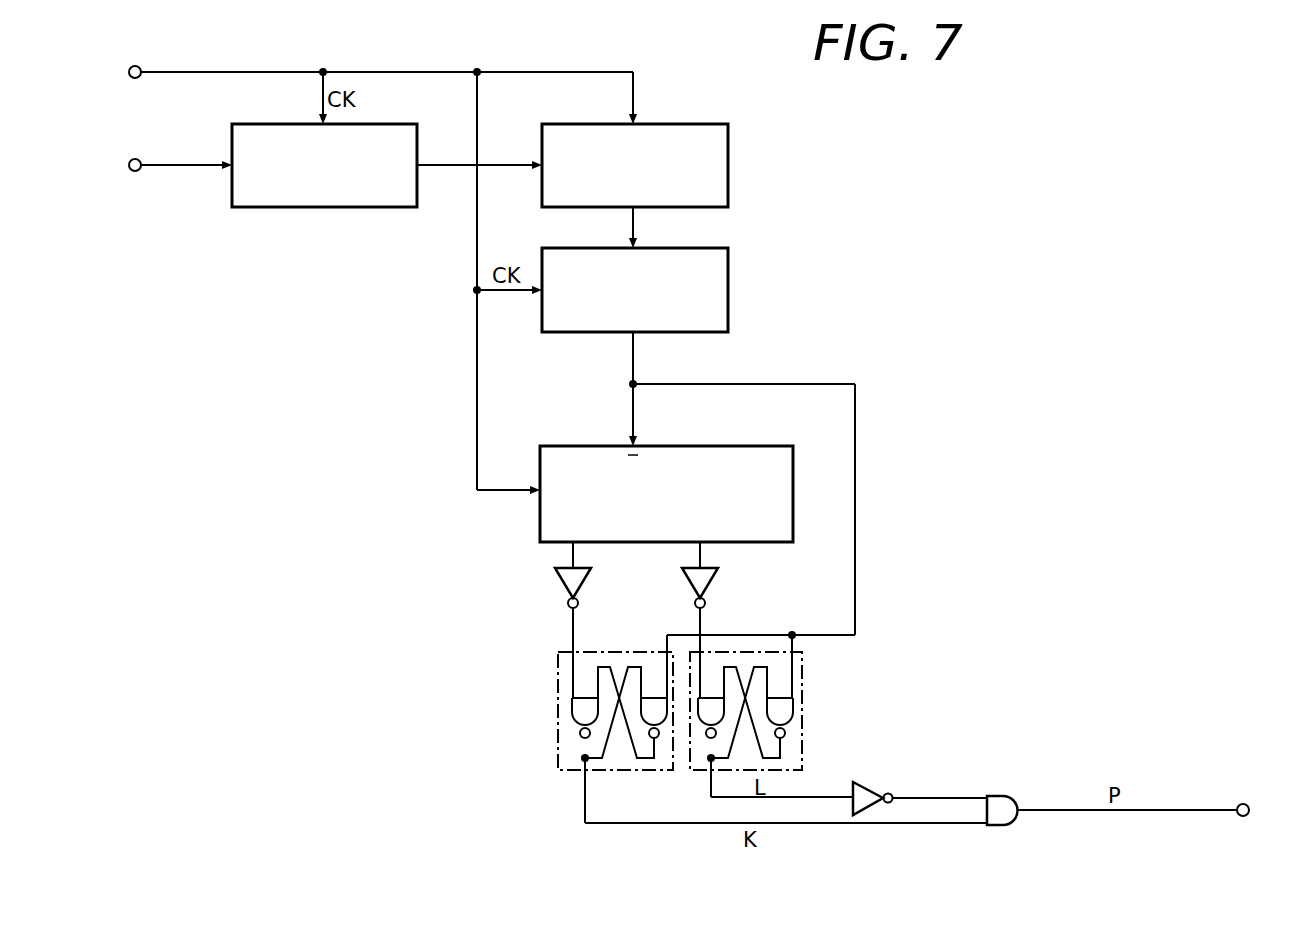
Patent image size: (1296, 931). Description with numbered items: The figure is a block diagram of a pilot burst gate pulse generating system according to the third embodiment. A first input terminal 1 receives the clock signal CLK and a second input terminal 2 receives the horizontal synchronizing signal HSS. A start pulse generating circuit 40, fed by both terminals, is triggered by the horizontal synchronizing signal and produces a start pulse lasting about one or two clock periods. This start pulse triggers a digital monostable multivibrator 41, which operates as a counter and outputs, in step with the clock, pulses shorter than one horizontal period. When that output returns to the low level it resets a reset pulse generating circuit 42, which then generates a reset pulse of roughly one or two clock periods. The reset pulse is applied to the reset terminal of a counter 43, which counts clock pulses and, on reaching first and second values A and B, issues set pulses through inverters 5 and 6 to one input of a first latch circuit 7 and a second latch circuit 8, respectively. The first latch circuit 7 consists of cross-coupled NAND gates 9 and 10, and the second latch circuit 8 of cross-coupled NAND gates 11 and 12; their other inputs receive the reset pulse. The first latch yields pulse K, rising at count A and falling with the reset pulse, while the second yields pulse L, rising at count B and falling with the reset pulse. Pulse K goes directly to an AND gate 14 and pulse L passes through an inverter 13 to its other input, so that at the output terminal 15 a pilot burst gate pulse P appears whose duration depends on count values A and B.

The first input terminal 1 is at (136, 66).
The second input terminal 2 is at (135, 172).
The start pulse generating circuit 40 is at (277, 208).
The digital monostable multivibrator 41 is at (729, 144).
The reset pulse generating circuit 42 is at (729, 270).
The counter 43 is at (742, 445).
The inverter 5 is at (553, 578).
The inverter 6 is at (720, 580).
The first latch circuit 7 is at (589, 735).
The second latch circuit 8 is at (773, 733).
The NAND gate 9 is at (570, 711).
The NAND gate 10 is at (660, 716).
The NAND gate 11 is at (705, 716).
The NAND gate 12 is at (784, 713).
The inverter 13 is at (878, 787).
The AND gate 14 is at (1000, 795).
The output terminal 15 is at (1244, 804).